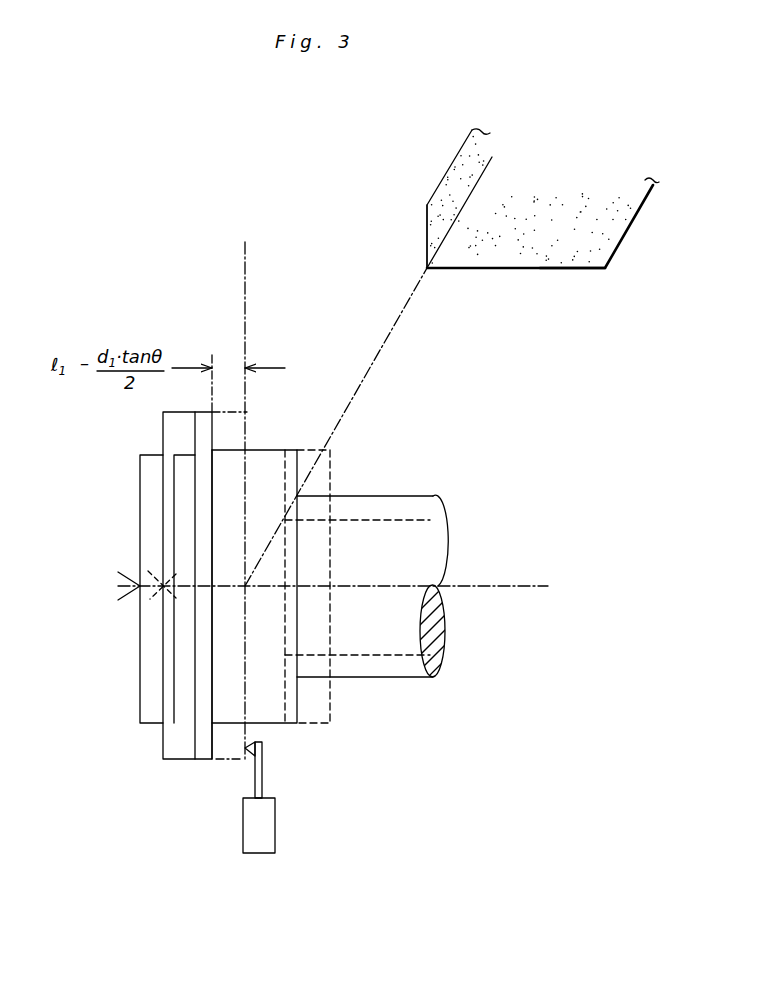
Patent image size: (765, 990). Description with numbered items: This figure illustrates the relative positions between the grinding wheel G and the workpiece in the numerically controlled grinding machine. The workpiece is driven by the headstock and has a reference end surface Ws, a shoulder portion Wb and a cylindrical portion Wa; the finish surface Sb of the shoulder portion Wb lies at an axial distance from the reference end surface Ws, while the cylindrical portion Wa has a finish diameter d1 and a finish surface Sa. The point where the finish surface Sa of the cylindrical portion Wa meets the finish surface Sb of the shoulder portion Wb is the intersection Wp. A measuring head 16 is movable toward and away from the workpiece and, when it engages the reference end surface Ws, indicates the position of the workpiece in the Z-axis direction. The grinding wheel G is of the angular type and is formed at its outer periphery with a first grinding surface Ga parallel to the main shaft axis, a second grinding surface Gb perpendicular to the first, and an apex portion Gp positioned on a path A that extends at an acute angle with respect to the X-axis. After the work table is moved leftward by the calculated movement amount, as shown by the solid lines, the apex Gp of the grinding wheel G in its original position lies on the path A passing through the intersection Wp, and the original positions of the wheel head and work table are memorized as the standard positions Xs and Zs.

The grinding wheel G is at (628, 222).
The second grinding surface Gb is at (427, 213).
The apex portion Gp is at (432, 270).
The first grinding surface Ga is at (565, 270).
The cylindrical portion Wa is at (398, 493).
The shoulder portion Wb is at (303, 468).
The intersection Wp is at (285, 520).
The reference end surface Ws is at (213, 752).
The finish surface of cylindrical portion Sa is at (427, 520).
The finish surface of shoulder portion Sb is at (285, 703).
The path A is at (356, 404).
The measuring head 16 is at (276, 822).
The standard position Zs is at (427, 247).
The standard position Xs is at (531, 268).
The finish diameter d1 is at (383, 655).